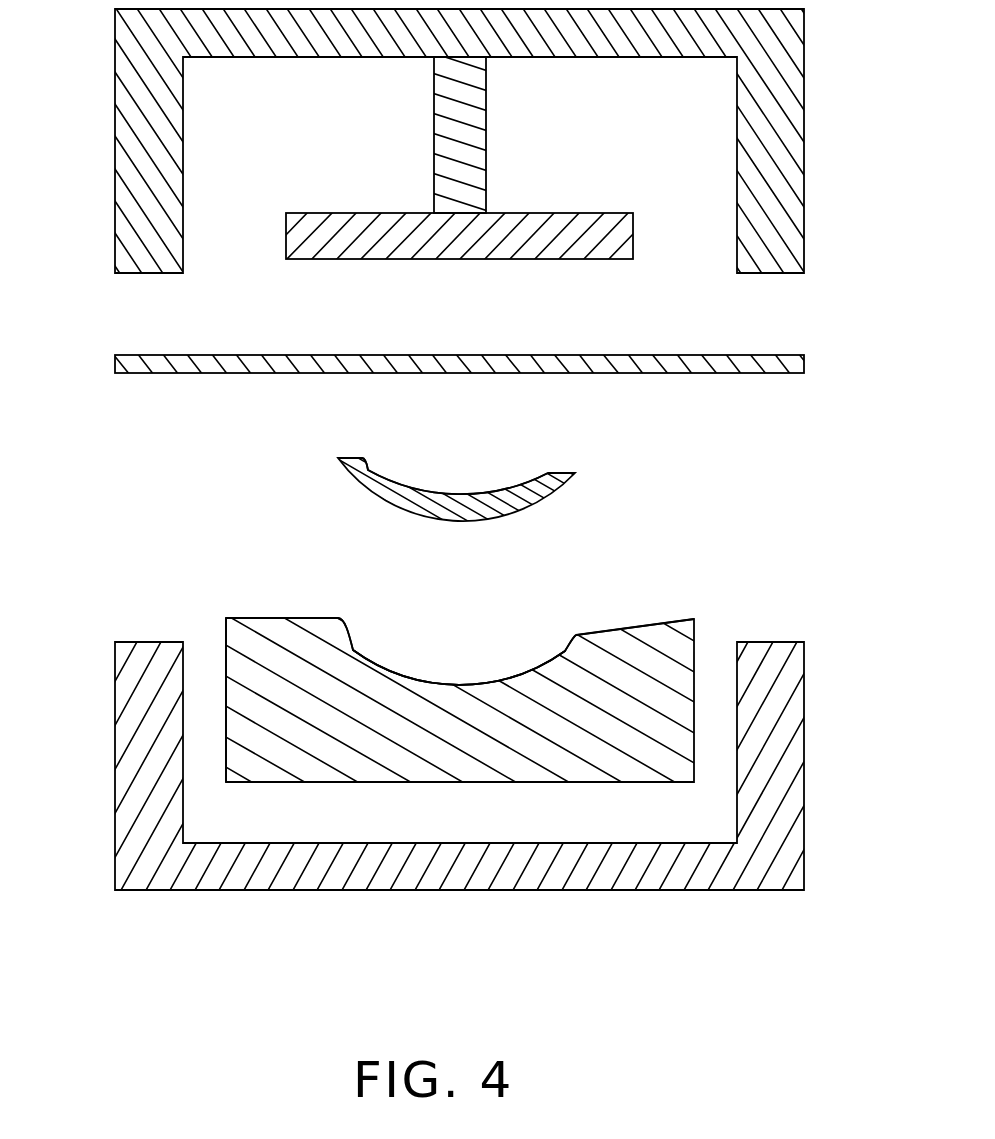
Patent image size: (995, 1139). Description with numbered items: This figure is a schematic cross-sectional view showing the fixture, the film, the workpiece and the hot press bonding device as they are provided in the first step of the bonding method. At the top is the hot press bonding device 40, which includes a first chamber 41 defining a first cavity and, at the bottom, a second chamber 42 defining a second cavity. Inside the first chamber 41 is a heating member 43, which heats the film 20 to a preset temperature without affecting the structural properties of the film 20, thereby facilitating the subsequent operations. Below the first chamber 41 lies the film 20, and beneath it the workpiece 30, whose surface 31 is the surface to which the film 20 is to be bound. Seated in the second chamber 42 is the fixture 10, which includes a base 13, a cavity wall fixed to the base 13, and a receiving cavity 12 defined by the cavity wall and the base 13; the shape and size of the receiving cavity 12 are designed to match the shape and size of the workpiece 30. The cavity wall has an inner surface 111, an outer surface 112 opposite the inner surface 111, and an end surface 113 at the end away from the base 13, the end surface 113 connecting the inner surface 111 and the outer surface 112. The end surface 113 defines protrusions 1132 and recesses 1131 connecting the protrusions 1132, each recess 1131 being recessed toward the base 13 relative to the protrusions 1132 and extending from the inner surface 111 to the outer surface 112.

The fixture 10 is at (467, 750).
The inner surface 111 is at (355, 650).
The outer surface 112 is at (226, 670).
The end surface 113 is at (467, 593).
The recess 1131 is at (645, 622).
The protrusion 1132 is at (275, 617).
The receiving cavity 12 is at (545, 633).
The base 13 is at (543, 760).
The film 20 is at (772, 356).
The workpiece 30 is at (466, 471).
The surface 31 is at (397, 482).
The hot press bonding device 40 is at (448, 141).
The first chamber 41 is at (785, 177).
The second chamber 42 is at (785, 757).
The heating member 43 is at (553, 233).